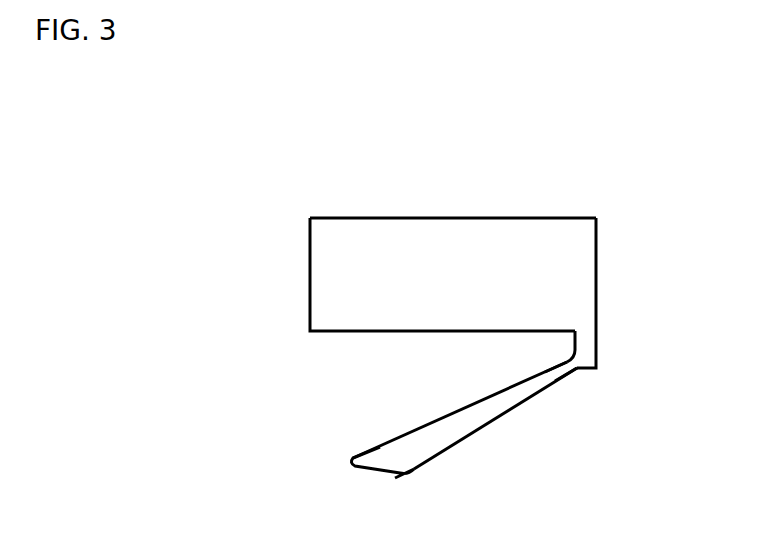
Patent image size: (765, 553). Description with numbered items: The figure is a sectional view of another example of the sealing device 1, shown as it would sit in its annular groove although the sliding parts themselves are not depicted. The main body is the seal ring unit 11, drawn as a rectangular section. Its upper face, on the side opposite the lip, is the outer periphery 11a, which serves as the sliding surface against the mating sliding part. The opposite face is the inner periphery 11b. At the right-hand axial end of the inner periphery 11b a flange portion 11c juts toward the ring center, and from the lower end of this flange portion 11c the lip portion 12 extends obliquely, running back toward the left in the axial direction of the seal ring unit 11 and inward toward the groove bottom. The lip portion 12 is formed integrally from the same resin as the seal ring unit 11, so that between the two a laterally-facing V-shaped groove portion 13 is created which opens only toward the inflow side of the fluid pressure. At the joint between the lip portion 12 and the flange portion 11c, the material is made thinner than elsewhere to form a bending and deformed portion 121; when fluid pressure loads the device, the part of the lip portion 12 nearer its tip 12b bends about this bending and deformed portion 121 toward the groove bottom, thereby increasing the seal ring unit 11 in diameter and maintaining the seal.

The sealing device 1 is at (557, 198).
The seal ring unit 11 is at (582, 251).
The outer periphery 11a is at (415, 218).
The inner periphery 11b is at (333, 331).
The flange portion 11c is at (590, 345).
The lip portion 12 is at (476, 422).
The bending and deformed portion 121 is at (566, 364).
The tip 12b is at (376, 467).
The groove portion 13 is at (338, 382).